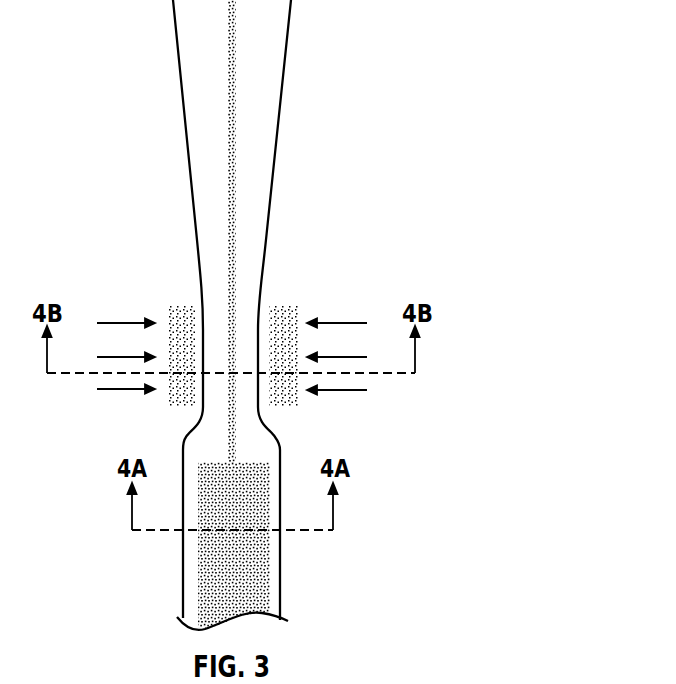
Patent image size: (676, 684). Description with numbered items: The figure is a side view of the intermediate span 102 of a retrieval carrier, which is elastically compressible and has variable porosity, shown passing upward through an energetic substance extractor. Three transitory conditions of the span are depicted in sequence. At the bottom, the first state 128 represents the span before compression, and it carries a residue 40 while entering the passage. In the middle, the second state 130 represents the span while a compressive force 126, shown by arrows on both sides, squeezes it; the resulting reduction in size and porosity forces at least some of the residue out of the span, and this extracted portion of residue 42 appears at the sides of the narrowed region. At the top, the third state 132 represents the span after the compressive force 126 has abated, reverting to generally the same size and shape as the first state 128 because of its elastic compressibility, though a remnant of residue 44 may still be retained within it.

The third state 132 is at (190, 187).
The remnant of residue 44 is at (233, 163).
The second state 130 is at (228, 345).
The extracted portion of residue 42 is at (300, 395).
The compressive force 126 is at (98, 310).
The residue 40 is at (267, 547).
The first state 128 is at (202, 593).
The intermediate span 102 is at (280, 592).